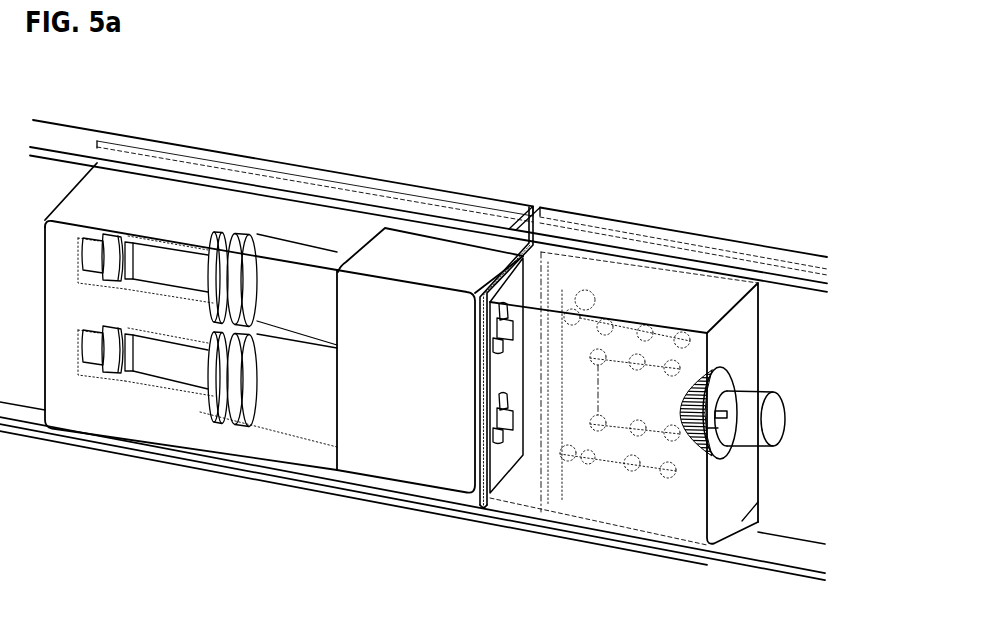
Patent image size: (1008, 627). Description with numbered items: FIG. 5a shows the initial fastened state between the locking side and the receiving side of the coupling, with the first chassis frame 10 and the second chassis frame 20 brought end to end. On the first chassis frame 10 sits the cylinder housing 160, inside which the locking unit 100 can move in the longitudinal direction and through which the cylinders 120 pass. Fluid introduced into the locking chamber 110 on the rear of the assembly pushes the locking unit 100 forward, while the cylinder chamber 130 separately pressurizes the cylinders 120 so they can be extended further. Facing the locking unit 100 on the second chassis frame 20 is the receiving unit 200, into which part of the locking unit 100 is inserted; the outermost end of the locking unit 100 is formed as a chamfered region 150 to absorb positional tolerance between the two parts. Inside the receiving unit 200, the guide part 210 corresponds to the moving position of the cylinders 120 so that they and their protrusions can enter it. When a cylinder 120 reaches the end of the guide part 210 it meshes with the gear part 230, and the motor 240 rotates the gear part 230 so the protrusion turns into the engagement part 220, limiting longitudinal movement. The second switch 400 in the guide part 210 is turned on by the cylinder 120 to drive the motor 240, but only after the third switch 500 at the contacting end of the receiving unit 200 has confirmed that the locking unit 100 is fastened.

The first chassis frame 10 is at (43, 172).
The second chassis frame 20 is at (782, 249).
The locking unit 100 is at (386, 237).
The locking chamber 110 is at (192, 330).
The cylinder 120 is at (167, 355).
The cylinder chamber 130 is at (105, 318).
The chamfered region 150 is at (553, 477).
The cylinder housing 160 is at (73, 424).
The receiving unit 200 is at (613, 318).
The guide part 210 is at (718, 350).
The engagement part 220 is at (613, 312).
The gear part 230 is at (713, 428).
The motor 240 is at (774, 422).
The second switch 400 is at (718, 363).
The third switch 500 is at (565, 490).